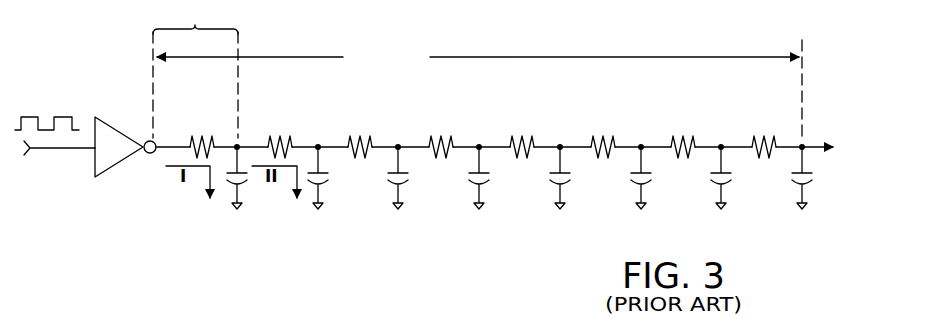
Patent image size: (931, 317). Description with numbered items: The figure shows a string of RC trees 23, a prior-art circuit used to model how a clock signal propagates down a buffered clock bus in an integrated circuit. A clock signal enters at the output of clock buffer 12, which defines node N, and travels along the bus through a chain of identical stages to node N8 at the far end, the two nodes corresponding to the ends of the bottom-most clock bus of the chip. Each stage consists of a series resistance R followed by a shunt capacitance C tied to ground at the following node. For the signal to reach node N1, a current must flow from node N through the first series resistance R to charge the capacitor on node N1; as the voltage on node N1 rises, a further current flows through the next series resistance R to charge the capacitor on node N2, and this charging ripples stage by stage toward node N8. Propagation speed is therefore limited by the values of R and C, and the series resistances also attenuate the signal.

The clock buffer 12 is at (118, 124).
The string of RC trees 23 is at (497, 104).
The node N is at (164, 137).
The node N1 is at (231, 138).
The node N2 is at (315, 138).
The node N8 is at (805, 136).
The series resistance R is at (213, 133).
The capacitance C is at (393, 176).